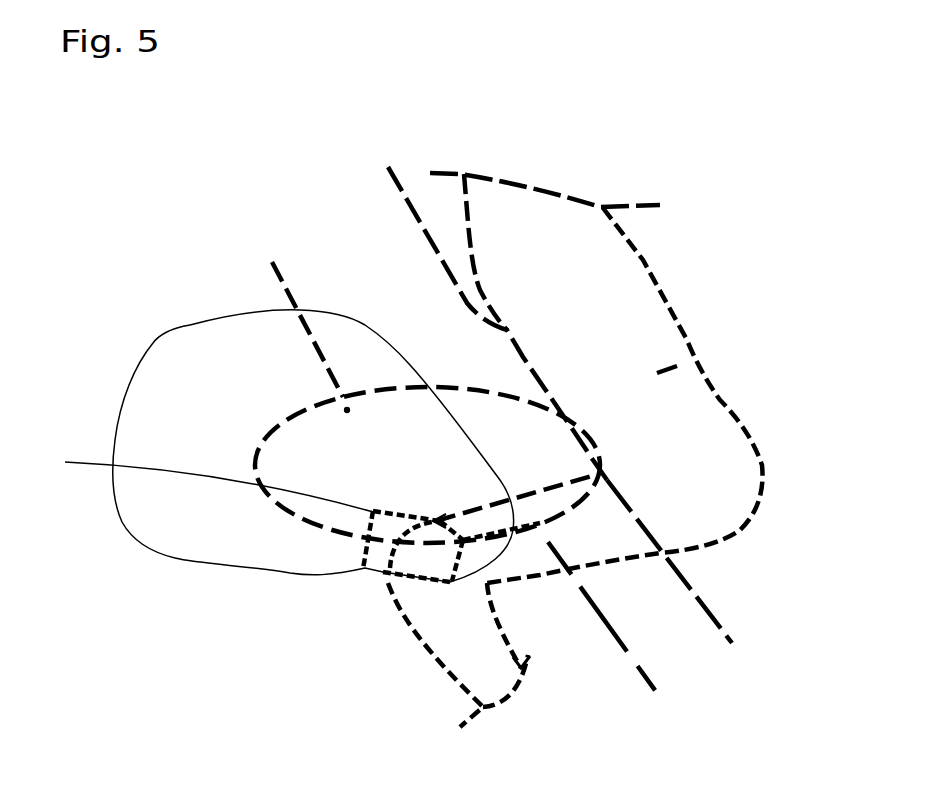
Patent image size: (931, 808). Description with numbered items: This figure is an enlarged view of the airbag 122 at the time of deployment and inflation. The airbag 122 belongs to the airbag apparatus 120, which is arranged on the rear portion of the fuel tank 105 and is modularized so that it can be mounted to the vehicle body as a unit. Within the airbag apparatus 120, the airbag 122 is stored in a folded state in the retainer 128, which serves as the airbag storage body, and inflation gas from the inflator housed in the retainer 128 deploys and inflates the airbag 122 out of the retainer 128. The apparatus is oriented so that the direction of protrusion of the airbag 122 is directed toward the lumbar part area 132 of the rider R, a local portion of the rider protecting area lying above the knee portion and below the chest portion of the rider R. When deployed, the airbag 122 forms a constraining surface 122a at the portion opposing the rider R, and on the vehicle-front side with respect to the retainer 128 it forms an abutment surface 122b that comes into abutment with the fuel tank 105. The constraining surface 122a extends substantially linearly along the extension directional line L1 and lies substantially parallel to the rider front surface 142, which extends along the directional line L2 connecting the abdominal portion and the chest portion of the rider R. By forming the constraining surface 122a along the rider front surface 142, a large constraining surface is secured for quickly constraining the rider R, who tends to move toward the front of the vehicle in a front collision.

The fuel tank 105 is at (90, 464).
The airbag apparatus 120 is at (350, 629).
The retainer 128 is at (376, 567).
The airbag 122 is at (284, 449).
The constraining surface 122a is at (413, 362).
The abutment surface 122b is at (208, 565).
The lumbar part area 132 is at (304, 320).
The rider front surface 142 is at (481, 306).
The rider R is at (691, 344).
The extension directional line L1 is at (627, 653).
The directional line L2 is at (710, 613).